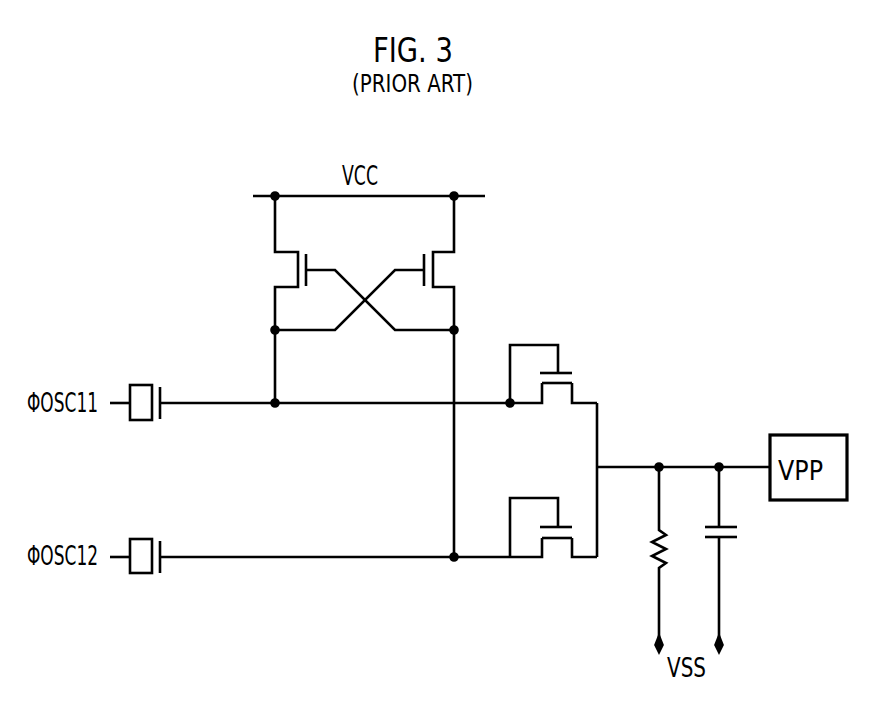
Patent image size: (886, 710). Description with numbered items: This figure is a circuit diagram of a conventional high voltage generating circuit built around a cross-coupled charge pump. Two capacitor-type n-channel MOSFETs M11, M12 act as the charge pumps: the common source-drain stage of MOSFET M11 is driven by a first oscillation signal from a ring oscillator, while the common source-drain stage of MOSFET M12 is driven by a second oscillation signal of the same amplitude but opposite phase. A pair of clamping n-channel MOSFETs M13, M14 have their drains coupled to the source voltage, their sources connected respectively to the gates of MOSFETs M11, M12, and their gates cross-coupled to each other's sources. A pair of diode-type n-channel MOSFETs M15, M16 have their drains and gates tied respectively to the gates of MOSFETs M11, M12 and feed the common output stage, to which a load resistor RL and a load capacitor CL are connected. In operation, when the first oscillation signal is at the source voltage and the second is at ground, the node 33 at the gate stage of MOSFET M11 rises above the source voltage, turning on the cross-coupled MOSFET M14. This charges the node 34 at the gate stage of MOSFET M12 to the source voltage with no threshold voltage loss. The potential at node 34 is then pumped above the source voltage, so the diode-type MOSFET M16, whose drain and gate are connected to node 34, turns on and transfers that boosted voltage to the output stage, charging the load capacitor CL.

The n-channel MOSFET M11 is at (148, 385).
The n-channel MOSFET M12 is at (148, 539).
The n-channel MOSFET M13 is at (289, 271).
The n-channel MOSFET M14 is at (440, 271).
The diode-type n-channel MOSFET M15 is at (557, 395).
The diode-type n-channel MOSFET M16 is at (557, 545).
The node 33 is at (275, 405).
The node 34 is at (455, 560).
The load resistor RL is at (652, 548).
The load capacitor CL is at (737, 534).